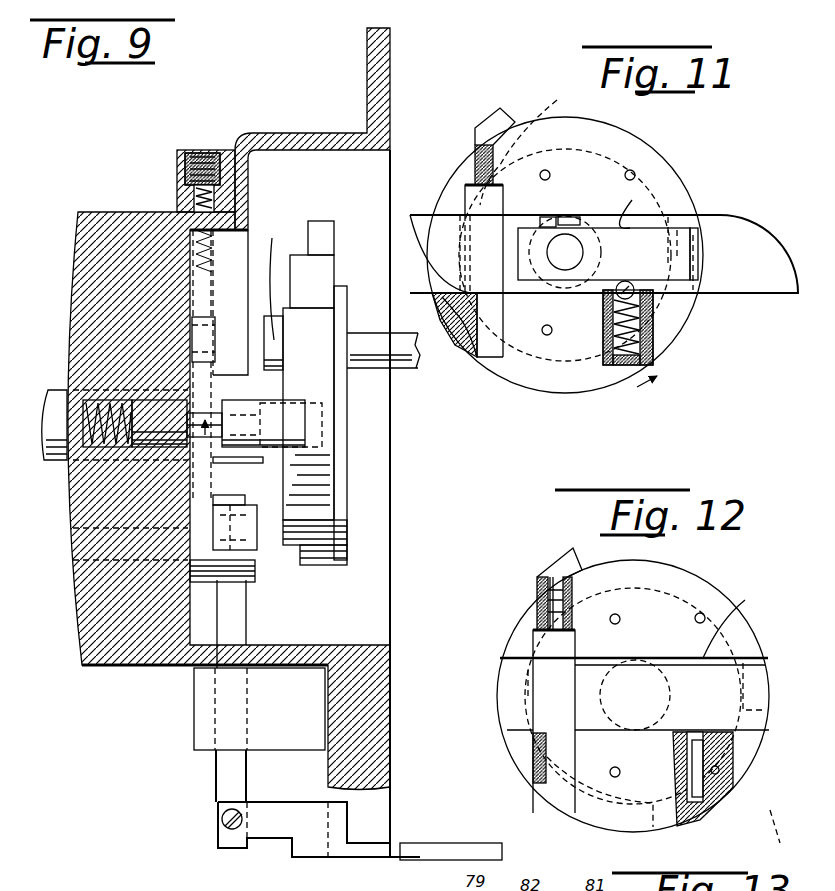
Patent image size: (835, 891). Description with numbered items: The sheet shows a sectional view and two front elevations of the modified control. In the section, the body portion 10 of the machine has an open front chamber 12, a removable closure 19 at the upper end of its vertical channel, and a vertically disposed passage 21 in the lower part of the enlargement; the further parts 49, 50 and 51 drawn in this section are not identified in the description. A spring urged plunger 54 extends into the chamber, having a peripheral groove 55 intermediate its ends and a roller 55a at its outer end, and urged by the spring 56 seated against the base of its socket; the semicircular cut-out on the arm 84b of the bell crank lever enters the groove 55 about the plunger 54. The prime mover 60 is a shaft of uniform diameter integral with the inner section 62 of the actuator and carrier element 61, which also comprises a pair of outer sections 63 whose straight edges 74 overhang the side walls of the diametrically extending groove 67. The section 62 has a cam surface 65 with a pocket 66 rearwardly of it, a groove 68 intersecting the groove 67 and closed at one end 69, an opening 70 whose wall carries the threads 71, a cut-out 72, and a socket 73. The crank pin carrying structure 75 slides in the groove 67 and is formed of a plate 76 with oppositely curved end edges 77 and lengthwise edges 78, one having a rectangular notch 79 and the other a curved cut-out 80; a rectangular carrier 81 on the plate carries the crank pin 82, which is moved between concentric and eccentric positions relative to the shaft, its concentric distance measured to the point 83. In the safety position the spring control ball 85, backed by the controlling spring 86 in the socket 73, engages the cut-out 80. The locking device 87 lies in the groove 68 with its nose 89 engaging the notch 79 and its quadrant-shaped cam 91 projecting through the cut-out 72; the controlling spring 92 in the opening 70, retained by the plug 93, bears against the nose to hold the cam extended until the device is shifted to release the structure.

In FIG. 9, the body portion 10 is at (72, 612).
In FIG. 9, the open front chamber 12 is at (380, 183).
In FIG. 9, the removable closure 19 is at (206, 148).
In FIG. 9, the vertically disposed passage 21 is at (250, 712).
In FIG. 9, the pin 49 is at (206, 302).
In FIG. 9, the threaded stem 50 is at (206, 193).
In FIG. 9, the pivot pin 51 is at (218, 779).
In FIG. 9, the spring urged plunger 54 is at (164, 412).
In FIG. 9, the peripheral groove 55 is at (190, 455).
In FIG. 9, the roller 55a is at (300, 397).
In FIG. 9, the urging spring 56 is at (92, 402).
In FIG. 9, the prime mover 60 is at (190, 437).
In FIG. 12, the prime mover 60 is at (673, 702).
In FIG. 9, the actuator and carrier element 61 is at (320, 458).
In FIG. 12, the inner section 62 is at (633, 711).
In FIG. 9, the outer sections 63 is at (341, 498).
In FIG. 11, the outer sections 63 is at (613, 167).
In FIG. 9, the cam surface 65 is at (323, 267).
In FIG. 9, the pocket 66 is at (276, 288).
In FIG. 11, the pocket 66 is at (677, 157).
In FIG. 12, the pocket 66 is at (727, 635).
In FIG. 11, the diametrically extending groove 67 is at (445, 285).
In FIG. 12, the diametrically extending groove 67 is at (723, 637).
In FIG. 11, the groove 68 is at (497, 363).
In FIG. 12, the groove 68 is at (543, 788).
In FIG. 12, the closed end 69 is at (533, 641).
In FIG. 12, the opening 70 is at (537, 610).
In FIG. 12, the threads 71 is at (557, 562).
In FIG. 12, the cut-out 72 is at (522, 748).
In FIG. 11, the socket 73 is at (600, 357).
In FIG. 12, the socket 73 is at (700, 788).
In FIG. 11, the straight edges 74 is at (618, 222).
In FIG. 9, the crank pin carrying structure 75 is at (346, 405).
In FIG. 11, the crank pin carrying structure 75 is at (732, 237).
In FIG. 11, the plate 76 is at (604, 269).
In FIG. 11, the curved end edges 77 is at (770, 248).
In FIG. 11, the lengthwise edges 78 is at (705, 217).
In FIG. 11, the rectangular notch 79 is at (558, 216).
In FIG. 11, the curved cut-out 80 is at (636, 290).
In FIG. 11, the rectangular carrier 81 is at (608, 254).
In FIG. 11, the crank pin 82 is at (568, 263).
In FIG. 11, the point 83 is at (437, 213).
In FIG. 9, the arm 84b is at (203, 560).
In FIG. 11, the spring control ball 85 is at (606, 305).
In FIG. 11, the controlling spring 86 is at (652, 358).
In FIG. 11, the locking device 87 is at (490, 208).
In FIG. 11, the nose 89 is at (456, 310).
In FIG. 11, the quadrant-shaped cam 91 is at (468, 348).
In FIG. 11, the controlling spring 92 is at (528, 143).
In FIG. 11, the plug 93 is at (478, 140).